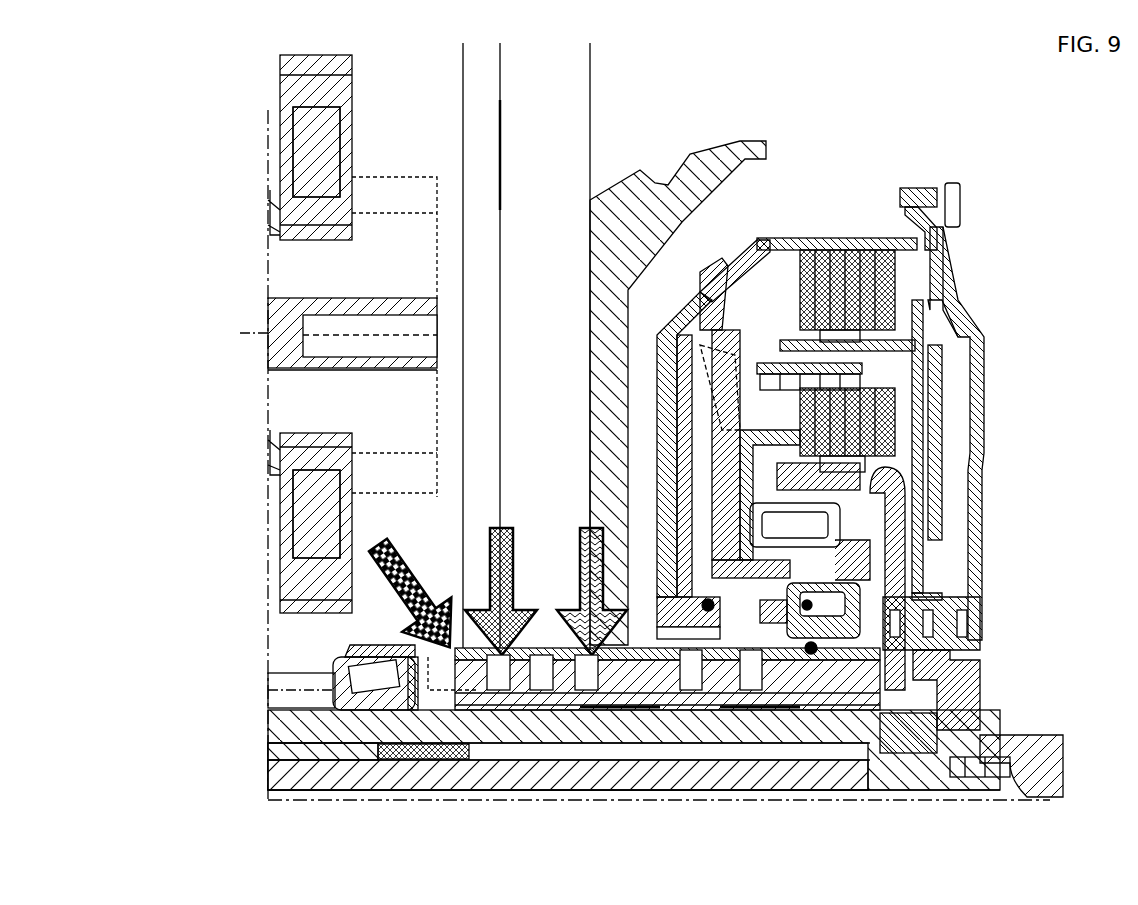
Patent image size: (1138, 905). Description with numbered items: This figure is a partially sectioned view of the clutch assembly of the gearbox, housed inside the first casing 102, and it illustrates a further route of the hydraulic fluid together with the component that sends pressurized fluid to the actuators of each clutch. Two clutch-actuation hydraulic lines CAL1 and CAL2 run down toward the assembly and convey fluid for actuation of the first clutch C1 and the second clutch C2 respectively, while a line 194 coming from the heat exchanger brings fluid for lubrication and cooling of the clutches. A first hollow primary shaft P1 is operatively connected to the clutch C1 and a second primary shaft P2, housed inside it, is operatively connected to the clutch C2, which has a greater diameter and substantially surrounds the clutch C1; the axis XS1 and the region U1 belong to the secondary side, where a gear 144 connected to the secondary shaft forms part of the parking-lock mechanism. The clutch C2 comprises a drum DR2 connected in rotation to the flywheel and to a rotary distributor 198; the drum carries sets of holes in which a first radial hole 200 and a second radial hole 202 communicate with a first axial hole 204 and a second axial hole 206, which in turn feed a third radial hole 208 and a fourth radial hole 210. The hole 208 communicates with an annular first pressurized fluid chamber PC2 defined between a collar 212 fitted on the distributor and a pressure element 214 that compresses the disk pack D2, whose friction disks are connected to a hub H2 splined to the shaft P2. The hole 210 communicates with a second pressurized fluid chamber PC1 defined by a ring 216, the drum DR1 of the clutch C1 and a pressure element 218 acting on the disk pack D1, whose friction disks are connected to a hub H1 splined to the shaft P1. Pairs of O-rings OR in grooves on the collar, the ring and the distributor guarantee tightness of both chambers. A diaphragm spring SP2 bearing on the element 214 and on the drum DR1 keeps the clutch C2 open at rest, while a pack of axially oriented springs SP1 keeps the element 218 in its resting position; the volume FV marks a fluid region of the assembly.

The gear 144 is at (283, 70).
The unit U1 is at (388, 185).
The axis XS1 is at (260, 333).
The clutch-actuation hydraulic line CAL1 is at (590, 105).
The clutch-actuation hydraulic line CAL2 is at (500, 102).
The first casing 102 is at (702, 224).
The drum DR2 is at (975, 135).
The second clutch C2 is at (802, 262).
The disk pack D2 is at (890, 232).
The pressure element 214 is at (728, 268).
The drum DR1 is at (705, 345).
The diaphragm spring SP2 is at (650, 390).
The first clutch C1 is at (915, 408).
The pressure element 218 is at (792, 432).
The ring 216 is at (782, 580).
The disk pack D1 is at (866, 545).
The pack of springs SP1 is at (810, 600).
The O-rings OR is at (705, 600).
The line 194 is at (462, 545).
The collar 212 is at (600, 580).
The first pressurized fluid chamber PC2 is at (582, 592).
The hub H2 is at (928, 540).
The second pressurized fluid chamber PC1 is at (890, 610).
The fluid volume FV is at (1027, 731).
The first radial hole 200 is at (490, 717).
The first axial hole 204 is at (507, 727).
The second radial hole 202 is at (583, 720).
The second axial hole 206 is at (585, 712).
The first primary shaft P1 is at (648, 705).
The rotary distributor 198 is at (672, 700).
The third radial hole 208 is at (716, 695).
The fourth radial hole 210 is at (790, 740).
The hub H1 is at (855, 700).
The second primary shaft P2 is at (905, 768).